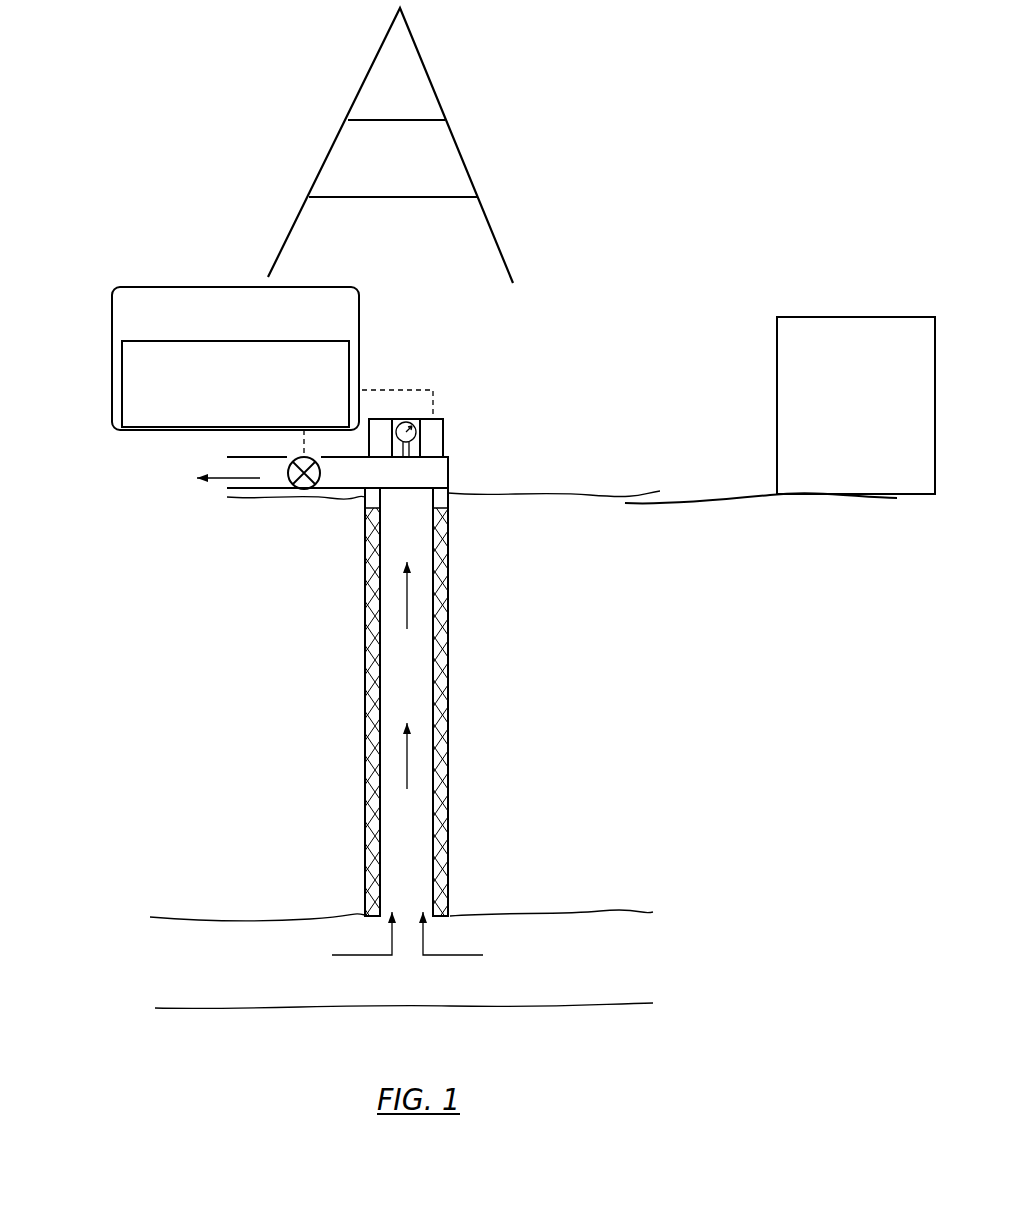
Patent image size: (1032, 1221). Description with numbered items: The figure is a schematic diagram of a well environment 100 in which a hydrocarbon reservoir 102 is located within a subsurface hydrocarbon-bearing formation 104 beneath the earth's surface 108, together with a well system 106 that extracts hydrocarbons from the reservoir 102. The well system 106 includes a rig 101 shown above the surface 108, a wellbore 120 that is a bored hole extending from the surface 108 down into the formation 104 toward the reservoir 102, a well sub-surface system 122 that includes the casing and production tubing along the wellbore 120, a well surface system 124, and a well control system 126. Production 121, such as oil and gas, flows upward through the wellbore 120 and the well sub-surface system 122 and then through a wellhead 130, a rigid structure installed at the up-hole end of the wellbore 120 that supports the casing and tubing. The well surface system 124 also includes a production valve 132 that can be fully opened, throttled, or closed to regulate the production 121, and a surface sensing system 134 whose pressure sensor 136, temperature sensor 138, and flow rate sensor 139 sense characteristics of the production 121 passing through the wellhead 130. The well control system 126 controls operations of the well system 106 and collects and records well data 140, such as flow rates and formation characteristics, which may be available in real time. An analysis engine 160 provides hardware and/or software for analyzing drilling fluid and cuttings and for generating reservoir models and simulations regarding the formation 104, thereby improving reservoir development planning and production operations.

The well environment 100 is at (534, 172).
The rig 101 is at (454, 77).
The hydrocarbon reservoir 102 is at (568, 978).
The hydrocarbon-bearing formation 104 is at (591, 792).
The well system 106 is at (210, 261).
The surface 108 is at (539, 505).
The wellbore 120 is at (452, 648).
The production 121 is at (161, 466).
The well subsurface system 122 is at (361, 735).
The well surface system 124 is at (620, 345).
The well control system 126 is at (155, 336).
The wellhead 130 is at (451, 484).
The production valve 132 is at (302, 490).
The surface sensing system 134 is at (450, 431).
The pressure sensor 136 is at (404, 417).
The temperature sensor 138 is at (432, 415).
The flow rate sensor 139 is at (381, 417).
The well data 140 is at (251, 406).
The analysis engine 160 is at (873, 445).